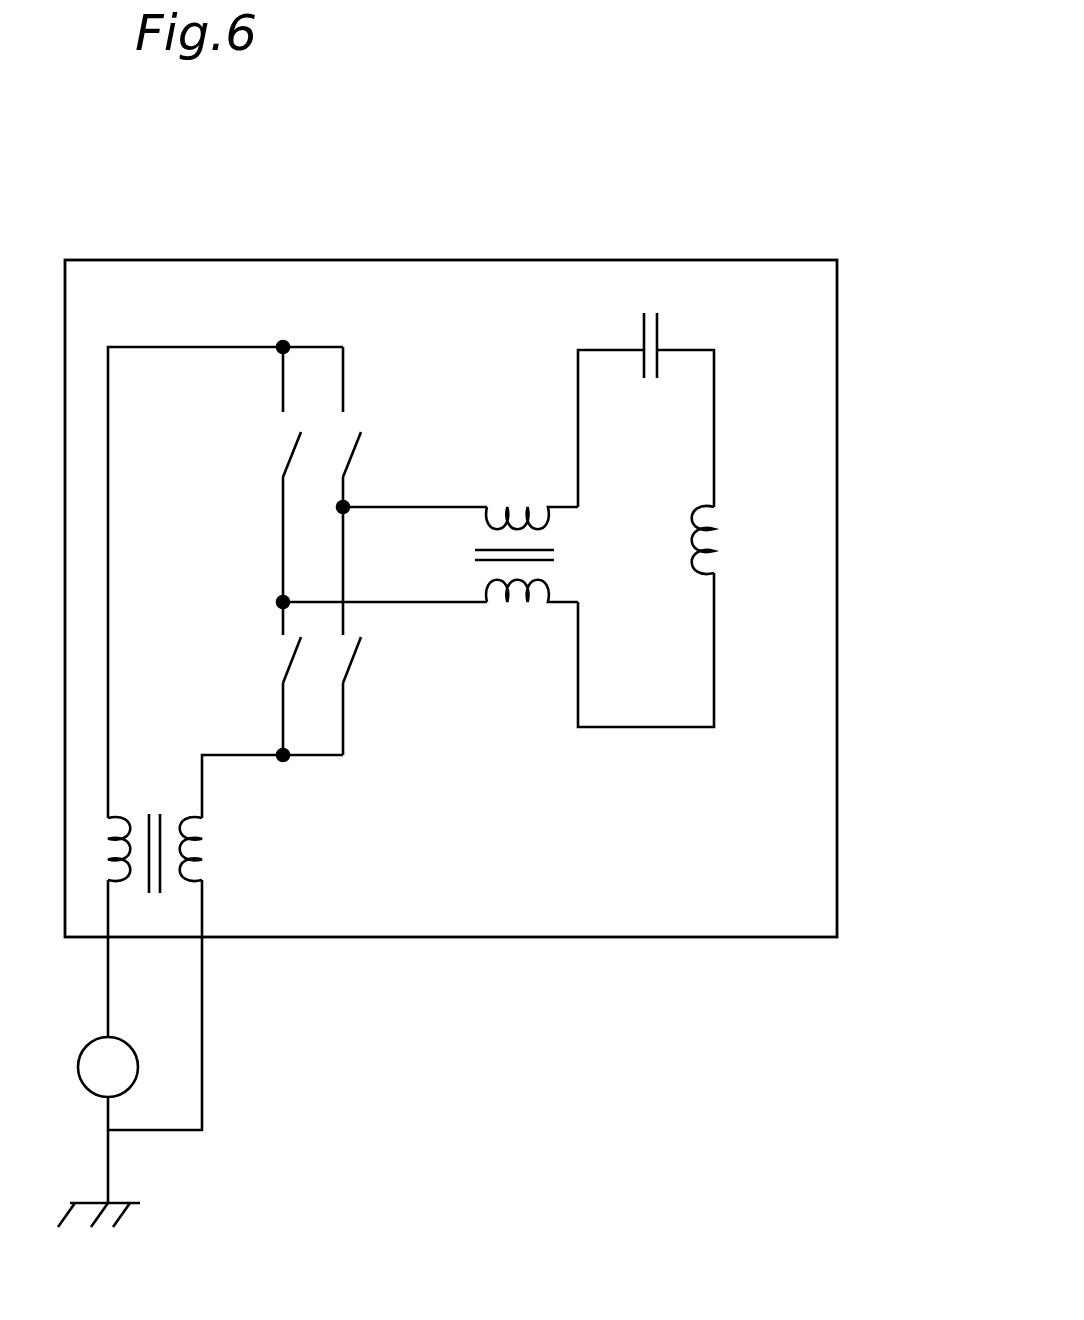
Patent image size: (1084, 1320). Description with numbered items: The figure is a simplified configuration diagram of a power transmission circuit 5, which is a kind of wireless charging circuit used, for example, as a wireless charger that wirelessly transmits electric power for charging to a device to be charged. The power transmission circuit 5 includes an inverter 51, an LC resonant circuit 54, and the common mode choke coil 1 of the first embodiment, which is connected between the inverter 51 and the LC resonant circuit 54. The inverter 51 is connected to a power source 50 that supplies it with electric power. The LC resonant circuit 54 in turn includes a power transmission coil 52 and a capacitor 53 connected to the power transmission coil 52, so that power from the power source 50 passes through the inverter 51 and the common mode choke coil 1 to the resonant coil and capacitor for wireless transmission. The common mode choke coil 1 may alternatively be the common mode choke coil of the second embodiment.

The common mode choke coil 1 is at (501, 492).
The power transmission circuit 5 is at (327, 252).
The power source 50 is at (216, 1028).
The inverter 51 is at (200, 332).
The power transmission coil 52 is at (715, 513).
The capacitor 53 is at (657, 332).
The LC resonant circuit 54 is at (762, 457).